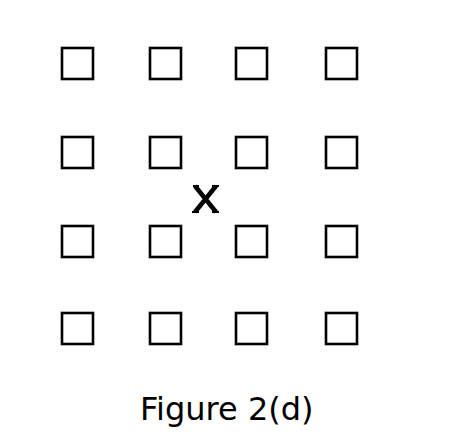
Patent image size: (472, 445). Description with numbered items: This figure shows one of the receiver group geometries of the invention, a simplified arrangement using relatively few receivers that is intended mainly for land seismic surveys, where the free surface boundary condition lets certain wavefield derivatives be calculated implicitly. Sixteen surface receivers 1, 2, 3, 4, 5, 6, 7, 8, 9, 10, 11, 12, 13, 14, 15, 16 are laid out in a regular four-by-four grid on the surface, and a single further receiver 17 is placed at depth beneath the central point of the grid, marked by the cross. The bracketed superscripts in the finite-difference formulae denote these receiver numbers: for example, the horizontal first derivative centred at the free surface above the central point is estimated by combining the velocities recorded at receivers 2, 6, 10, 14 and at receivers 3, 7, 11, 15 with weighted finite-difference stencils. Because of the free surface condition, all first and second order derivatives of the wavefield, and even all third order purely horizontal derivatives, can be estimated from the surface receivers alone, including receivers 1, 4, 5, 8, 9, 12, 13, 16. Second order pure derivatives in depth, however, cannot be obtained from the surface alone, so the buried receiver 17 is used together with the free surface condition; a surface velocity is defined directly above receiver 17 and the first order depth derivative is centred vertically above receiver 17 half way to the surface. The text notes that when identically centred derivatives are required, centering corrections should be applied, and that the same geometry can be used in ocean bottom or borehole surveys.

The receiver 1 is at (342, 346).
The receiver 2 is at (251, 346).
The receiver 3 is at (165, 346).
The receiver 4 is at (77, 346).
The receiver 5 is at (341, 259).
The receiver 6 is at (251, 259).
The receiver 7 is at (165, 259).
The receiver 8 is at (77, 259).
The receiver 9 is at (341, 170).
The receiver 10 is at (254, 170).
The receiver 11 is at (165, 170).
The receiver 12 is at (80, 170).
The receiver 13 is at (345, 81).
The receiver 14 is at (255, 81).
The receiver 15 is at (165, 81).
The receiver 16 is at (80, 81).
The receiver at depth 17 is at (210, 217).